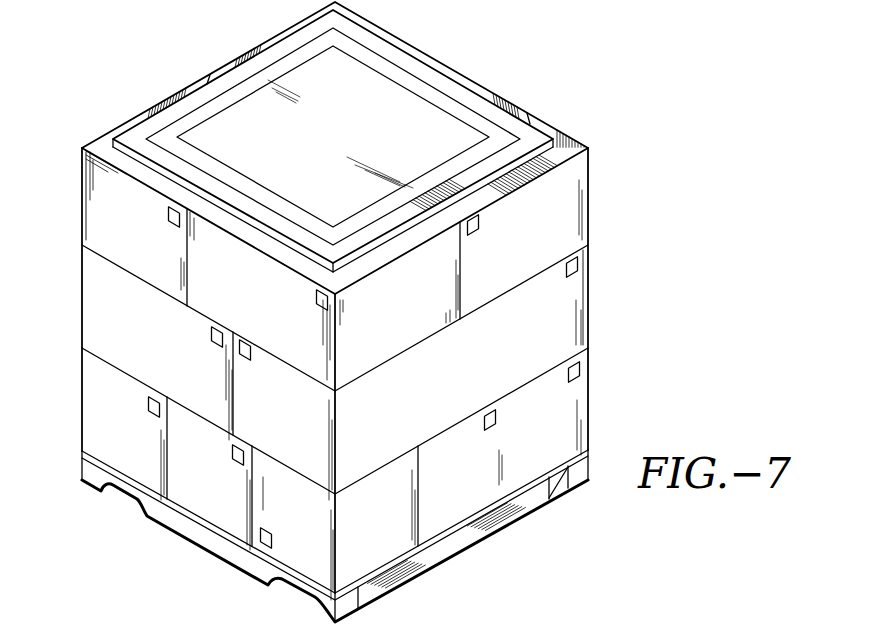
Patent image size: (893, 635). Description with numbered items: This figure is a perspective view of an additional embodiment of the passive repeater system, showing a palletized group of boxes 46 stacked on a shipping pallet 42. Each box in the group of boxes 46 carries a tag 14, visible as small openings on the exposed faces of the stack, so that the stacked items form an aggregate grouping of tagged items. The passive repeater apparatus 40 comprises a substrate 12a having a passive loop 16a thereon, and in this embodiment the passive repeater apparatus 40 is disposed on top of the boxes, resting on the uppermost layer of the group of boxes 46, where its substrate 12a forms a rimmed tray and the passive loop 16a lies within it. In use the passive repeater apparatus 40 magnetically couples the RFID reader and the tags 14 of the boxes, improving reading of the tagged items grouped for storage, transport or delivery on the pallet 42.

The substrate 12a is at (173, 108).
The passive loop 16a is at (403, 78).
The passive repeater apparatus 40 is at (523, 107).
The group of boxes 46 is at (588, 315).
The shipping pallet 42 is at (83, 465).
The tag 14 is at (316, 297).